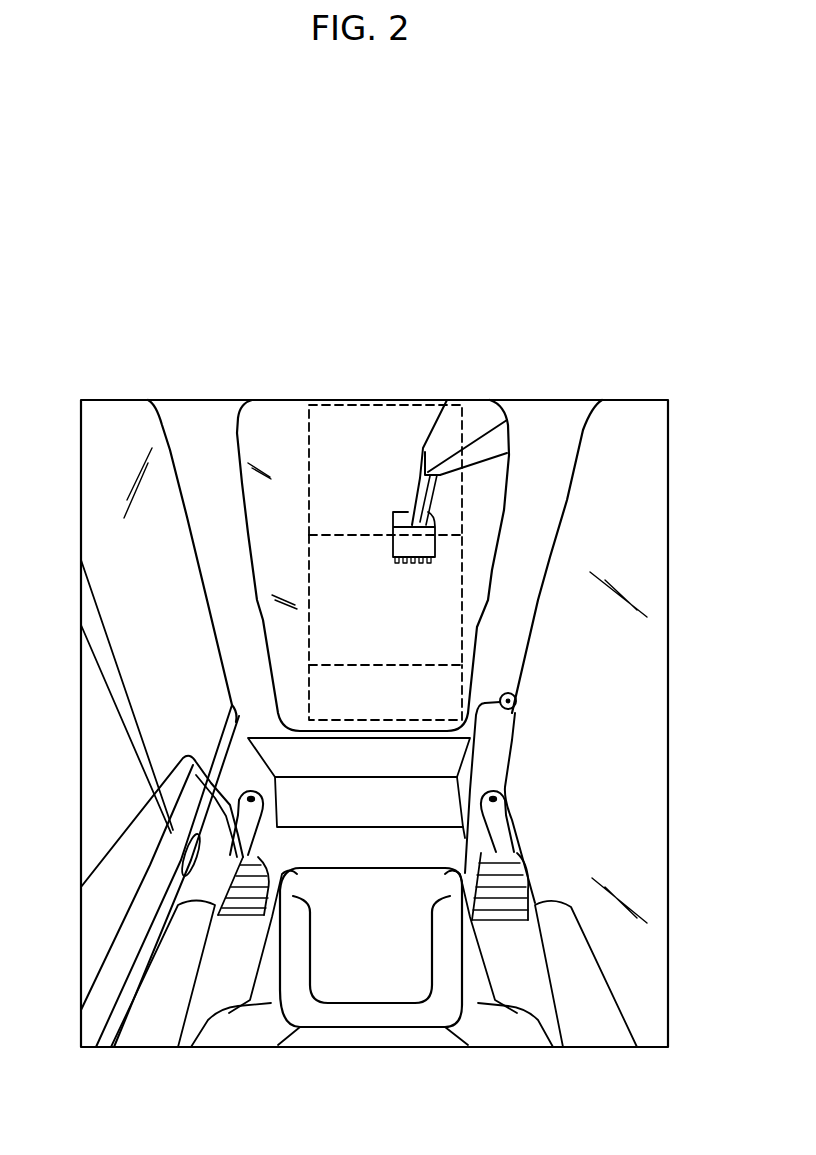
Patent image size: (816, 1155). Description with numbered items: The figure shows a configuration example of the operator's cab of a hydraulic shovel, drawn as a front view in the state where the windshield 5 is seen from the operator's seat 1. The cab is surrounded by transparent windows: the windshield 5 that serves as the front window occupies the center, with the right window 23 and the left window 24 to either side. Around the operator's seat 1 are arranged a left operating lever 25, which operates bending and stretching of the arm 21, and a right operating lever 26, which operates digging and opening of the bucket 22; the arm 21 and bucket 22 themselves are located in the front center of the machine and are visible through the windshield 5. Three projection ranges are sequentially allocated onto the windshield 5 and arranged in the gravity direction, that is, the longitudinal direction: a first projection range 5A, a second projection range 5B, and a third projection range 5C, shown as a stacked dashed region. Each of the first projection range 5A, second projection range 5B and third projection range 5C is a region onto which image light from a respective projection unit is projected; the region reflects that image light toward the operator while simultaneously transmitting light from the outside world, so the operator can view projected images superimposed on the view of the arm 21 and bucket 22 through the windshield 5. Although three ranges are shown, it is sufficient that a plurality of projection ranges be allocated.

The operator's seat 1 is at (370, 952).
The windshield 5 is at (260, 417).
The first projection range 5A is at (388, 443).
The second projection range 5B is at (425, 610).
The third projection range 5C is at (440, 682).
The arm 21 is at (453, 443).
The bucket 22 is at (413, 547).
The right window 23 is at (620, 447).
The left window 24 is at (103, 417).
The left operating lever 25 is at (238, 797).
The right operating lever 26 is at (495, 807).